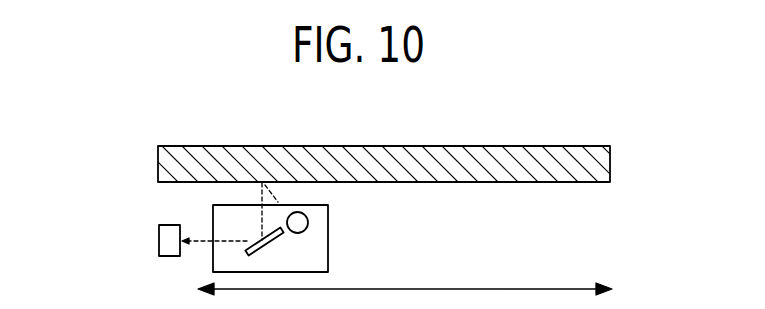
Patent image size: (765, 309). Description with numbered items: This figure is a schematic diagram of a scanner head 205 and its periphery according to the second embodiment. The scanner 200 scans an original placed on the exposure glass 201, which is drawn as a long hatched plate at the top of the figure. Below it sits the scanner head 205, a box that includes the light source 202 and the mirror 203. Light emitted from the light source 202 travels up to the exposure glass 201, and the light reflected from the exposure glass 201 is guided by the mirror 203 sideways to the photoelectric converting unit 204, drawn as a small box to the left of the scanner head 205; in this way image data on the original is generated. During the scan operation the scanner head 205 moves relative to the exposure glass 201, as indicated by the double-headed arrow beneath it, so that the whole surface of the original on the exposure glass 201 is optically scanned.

The scanner 200 is at (146, 116).
The exposure glass 201 is at (578, 145).
The light source 202 is at (309, 222).
The mirror 203 is at (272, 247).
The photoelectric converting unit 204 is at (163, 223).
The scanner head 205 is at (328, 259).